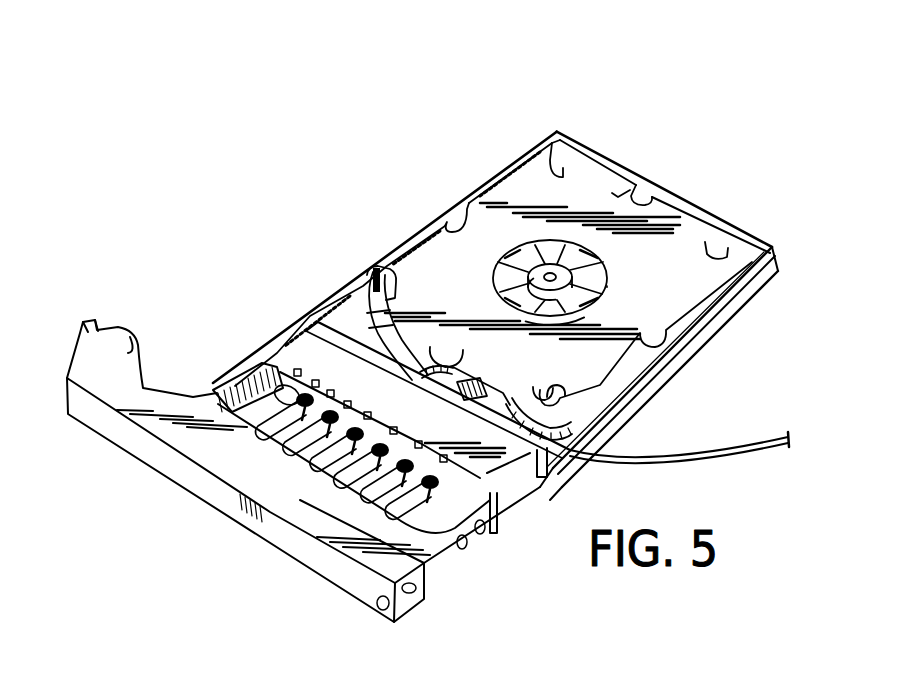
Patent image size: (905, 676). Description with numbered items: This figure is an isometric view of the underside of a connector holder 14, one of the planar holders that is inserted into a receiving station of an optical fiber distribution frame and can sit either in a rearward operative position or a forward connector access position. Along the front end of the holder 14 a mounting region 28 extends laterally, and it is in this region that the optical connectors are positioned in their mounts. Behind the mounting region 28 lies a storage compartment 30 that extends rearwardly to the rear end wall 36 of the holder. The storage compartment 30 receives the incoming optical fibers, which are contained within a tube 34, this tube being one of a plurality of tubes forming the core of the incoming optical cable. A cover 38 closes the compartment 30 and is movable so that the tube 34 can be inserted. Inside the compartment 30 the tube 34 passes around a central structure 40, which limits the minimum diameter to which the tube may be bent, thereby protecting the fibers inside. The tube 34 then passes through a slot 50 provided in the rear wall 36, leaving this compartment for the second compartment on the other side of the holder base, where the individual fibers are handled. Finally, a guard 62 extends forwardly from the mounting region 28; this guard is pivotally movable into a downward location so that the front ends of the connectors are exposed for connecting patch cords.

The connector holder 14 is at (717, 203).
The mounting region 28 is at (298, 352).
The storage compartment 30 is at (377, 268).
The tube 34 is at (740, 453).
The rear end wall 36 is at (607, 160).
The cover 38 is at (465, 282).
The central structure 40 is at (593, 254).
The slot 50 is at (643, 190).
The guard 62 is at (187, 473).